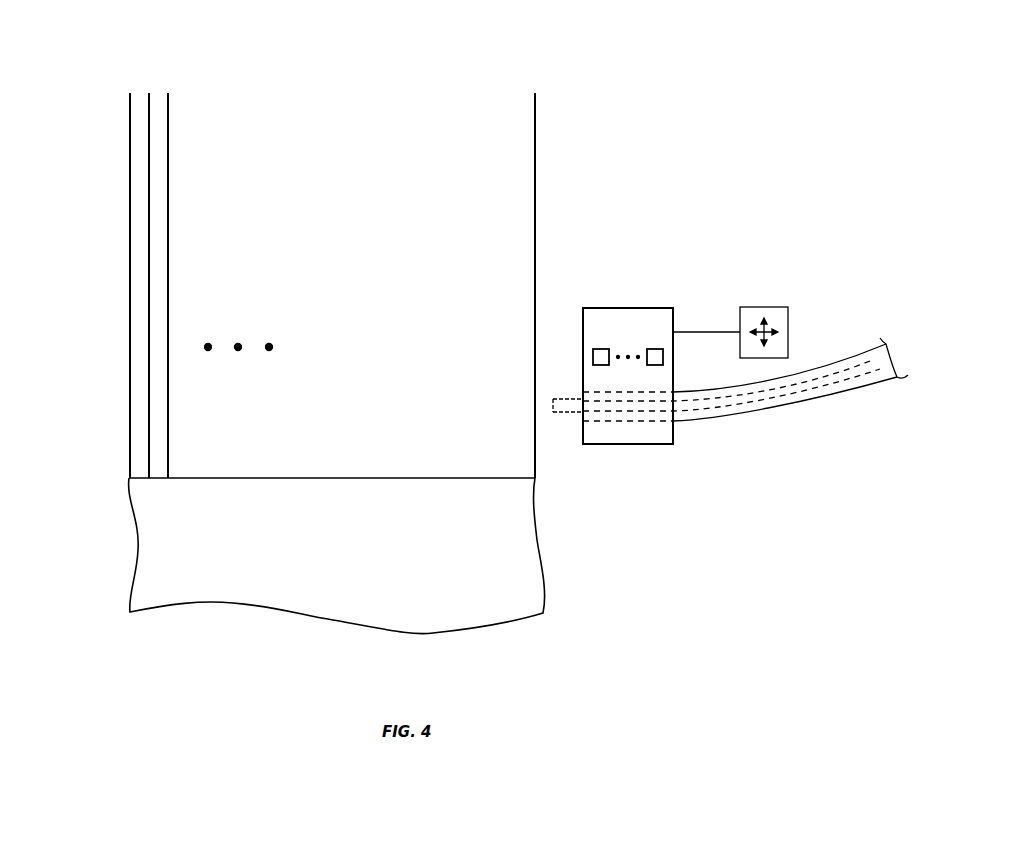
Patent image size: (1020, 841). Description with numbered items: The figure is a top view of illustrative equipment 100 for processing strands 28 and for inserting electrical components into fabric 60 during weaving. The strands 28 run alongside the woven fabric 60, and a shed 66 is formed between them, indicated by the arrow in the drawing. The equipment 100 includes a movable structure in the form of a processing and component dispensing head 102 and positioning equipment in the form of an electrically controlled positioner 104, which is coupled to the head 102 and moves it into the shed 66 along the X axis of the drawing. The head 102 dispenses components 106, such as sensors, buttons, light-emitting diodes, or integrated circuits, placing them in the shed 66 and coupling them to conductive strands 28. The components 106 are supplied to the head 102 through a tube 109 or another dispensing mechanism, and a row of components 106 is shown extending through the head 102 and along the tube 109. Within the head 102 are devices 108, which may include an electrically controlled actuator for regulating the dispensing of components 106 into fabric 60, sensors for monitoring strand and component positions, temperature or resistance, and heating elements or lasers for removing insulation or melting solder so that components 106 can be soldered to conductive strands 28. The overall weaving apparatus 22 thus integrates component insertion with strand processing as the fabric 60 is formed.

The display 22 is at (801, 122).
The strands 28 is at (149, 176).
The shed 66 is at (87, 400).
The fabric 60 is at (587, 482).
The equipment 100 is at (733, 262).
The processing and component dispensing head 102 is at (612, 318).
The electrically controlled positioner 104 is at (776, 307).
The components 106 is at (566, 413).
The devices 108 is at (590, 357).
The tube 109 is at (860, 390).